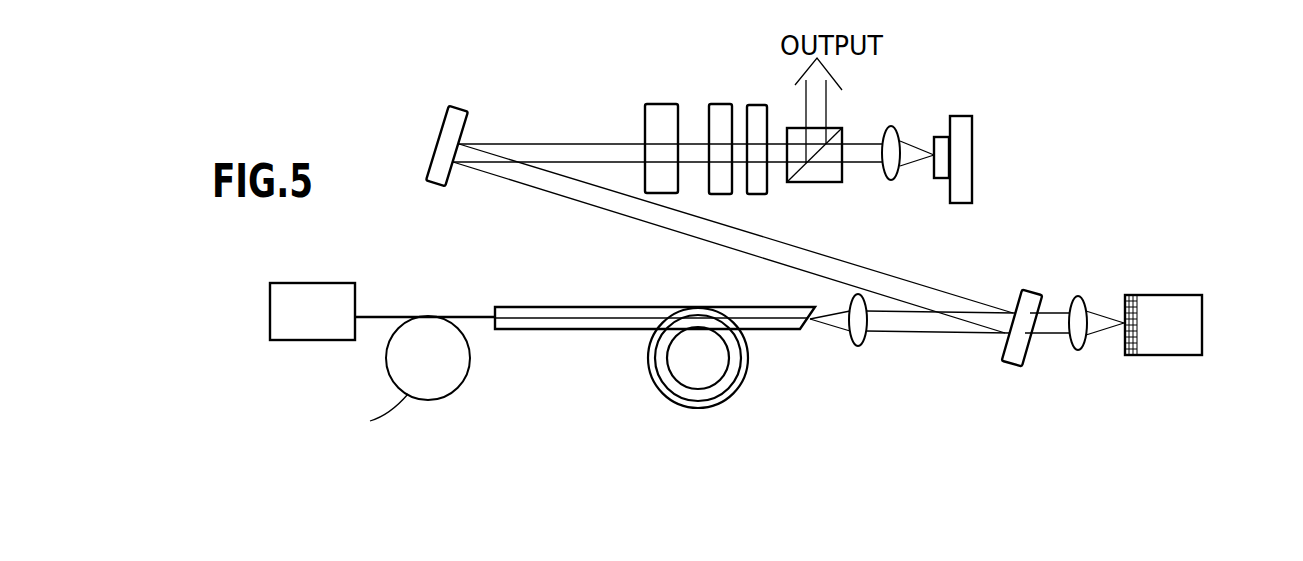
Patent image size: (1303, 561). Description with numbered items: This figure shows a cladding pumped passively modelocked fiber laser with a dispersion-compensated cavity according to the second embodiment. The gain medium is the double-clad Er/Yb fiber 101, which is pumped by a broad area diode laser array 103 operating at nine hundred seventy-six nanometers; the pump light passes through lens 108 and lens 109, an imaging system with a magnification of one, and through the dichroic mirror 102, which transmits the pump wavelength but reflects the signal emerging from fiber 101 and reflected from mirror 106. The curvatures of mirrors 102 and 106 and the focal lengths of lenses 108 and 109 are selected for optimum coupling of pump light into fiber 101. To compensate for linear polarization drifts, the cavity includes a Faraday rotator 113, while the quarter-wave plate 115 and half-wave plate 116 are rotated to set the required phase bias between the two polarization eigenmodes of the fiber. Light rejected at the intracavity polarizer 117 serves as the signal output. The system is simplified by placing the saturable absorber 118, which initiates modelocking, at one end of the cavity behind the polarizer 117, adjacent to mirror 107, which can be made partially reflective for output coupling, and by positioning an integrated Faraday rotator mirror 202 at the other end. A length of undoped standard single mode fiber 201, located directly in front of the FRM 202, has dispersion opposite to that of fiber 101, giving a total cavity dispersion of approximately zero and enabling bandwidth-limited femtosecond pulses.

The double-clad fiber 101 is at (652, 377).
The dichroic mirror 102 is at (1010, 363).
The diode laser array 103 is at (1146, 356).
The mirror 106 is at (463, 107).
The mirror 107 is at (971, 128).
The lens 108 is at (1078, 351).
The lens 109 is at (860, 346).
The Faraday rotator 113 is at (657, 103).
The quarter-wave plate 115 is at (736, 78).
The half-wave plate 116 is at (794, 78).
The polarizer 117 is at (837, 183).
The saturable absorber 118 is at (936, 137).
The single mode fiber 201 is at (465, 378).
The Faraday rotator mirror 202 is at (290, 283).